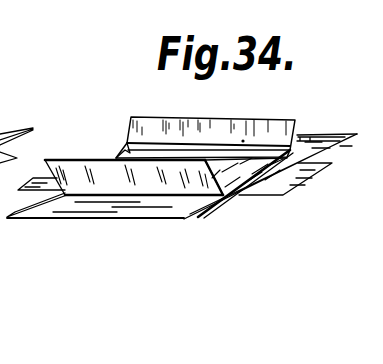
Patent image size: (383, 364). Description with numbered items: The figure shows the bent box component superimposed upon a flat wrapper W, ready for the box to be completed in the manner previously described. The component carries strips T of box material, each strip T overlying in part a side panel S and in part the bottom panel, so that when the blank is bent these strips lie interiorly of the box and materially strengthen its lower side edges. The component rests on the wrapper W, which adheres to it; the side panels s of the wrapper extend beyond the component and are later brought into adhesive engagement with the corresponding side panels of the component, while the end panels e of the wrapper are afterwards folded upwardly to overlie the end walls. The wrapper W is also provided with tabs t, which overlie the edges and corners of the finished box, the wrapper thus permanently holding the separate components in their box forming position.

The strip of box material T is at (205, 120).
The side panel S is at (245, 104).
The side panel of the wrapper s is at (303, 136).
The wrapper W is at (182, 196).
The tab t is at (10, 134).
The end panel of the wrapper e is at (36, 183).